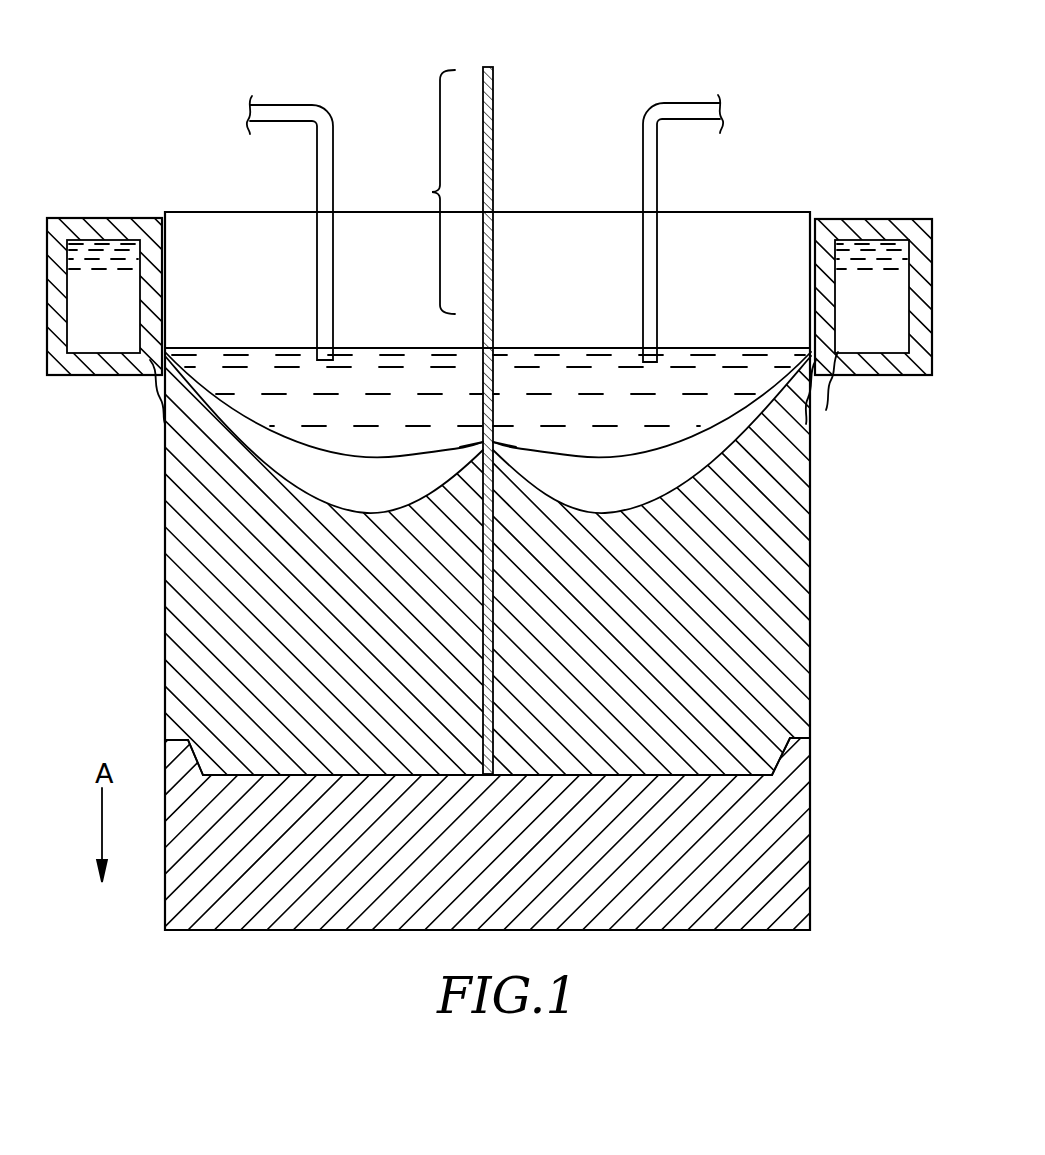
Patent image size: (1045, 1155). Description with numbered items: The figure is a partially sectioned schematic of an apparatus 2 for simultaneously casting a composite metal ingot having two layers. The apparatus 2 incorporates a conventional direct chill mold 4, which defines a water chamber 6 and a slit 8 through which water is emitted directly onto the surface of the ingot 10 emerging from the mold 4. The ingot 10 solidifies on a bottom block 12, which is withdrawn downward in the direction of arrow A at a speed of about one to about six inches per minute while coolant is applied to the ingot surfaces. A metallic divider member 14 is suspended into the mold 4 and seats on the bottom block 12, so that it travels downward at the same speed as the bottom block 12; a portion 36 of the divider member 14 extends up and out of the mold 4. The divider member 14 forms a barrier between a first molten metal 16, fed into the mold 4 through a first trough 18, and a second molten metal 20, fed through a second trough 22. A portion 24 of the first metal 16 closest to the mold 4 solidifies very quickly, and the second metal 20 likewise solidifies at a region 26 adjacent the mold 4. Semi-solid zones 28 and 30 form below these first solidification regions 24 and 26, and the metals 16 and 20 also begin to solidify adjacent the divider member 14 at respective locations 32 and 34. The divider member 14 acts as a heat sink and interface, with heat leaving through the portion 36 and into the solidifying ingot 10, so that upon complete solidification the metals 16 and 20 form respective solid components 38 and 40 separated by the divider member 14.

The apparatus 2 is at (763, 115).
The direct chill mold 4 is at (888, 218).
The water chamber 6 is at (850, 278).
The slit 8 is at (838, 352).
The ingot 10 is at (815, 620).
The bottom block 12 is at (812, 848).
The metallic divider member 14 is at (494, 125).
The first molten metal 16 is at (262, 370).
The first trough 18 is at (284, 104).
The second molten metal 20 is at (540, 368).
The second trough 22 is at (687, 103).
The portion of the first metal closest to the mold 24 is at (172, 386).
The solidification region of the second metal 26 is at (810, 376).
The semi-solid zone 28 is at (385, 493).
The semi-solid zone 30 is at (615, 498).
The solidification location adjacent the divider member 32 is at (482, 443).
The solidification location adjacent the divider member 34 is at (494, 449).
The portion of the divider member extending out of the mold 36 is at (427, 192).
The solid component 38 is at (346, 642).
The solid component 40 is at (663, 642).